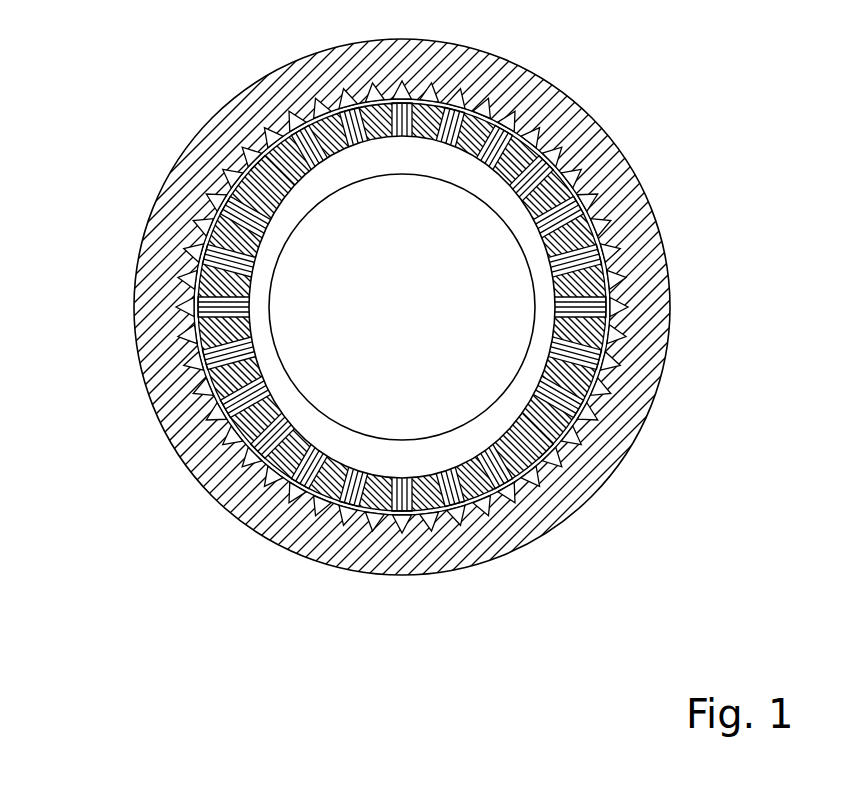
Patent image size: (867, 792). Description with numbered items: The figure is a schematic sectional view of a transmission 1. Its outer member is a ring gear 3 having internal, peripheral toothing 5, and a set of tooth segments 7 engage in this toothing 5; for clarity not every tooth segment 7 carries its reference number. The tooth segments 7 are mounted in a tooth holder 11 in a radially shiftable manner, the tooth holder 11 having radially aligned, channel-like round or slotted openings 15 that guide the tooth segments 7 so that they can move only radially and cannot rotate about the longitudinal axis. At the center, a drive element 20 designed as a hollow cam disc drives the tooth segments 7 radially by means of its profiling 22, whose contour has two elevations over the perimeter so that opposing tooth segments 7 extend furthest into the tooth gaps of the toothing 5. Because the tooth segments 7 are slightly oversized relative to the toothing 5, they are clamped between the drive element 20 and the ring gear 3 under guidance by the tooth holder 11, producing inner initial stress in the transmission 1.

The transmission 1 is at (433, 300).
The ring gear 3 is at (307, 56).
The toothing 5 is at (618, 377).
The tooth segments 7 is at (244, 164).
The tooth holder 11 is at (610, 260).
The openings 15 is at (593, 140).
The drive element 20 is at (300, 385).
The profiling 22 is at (307, 438).